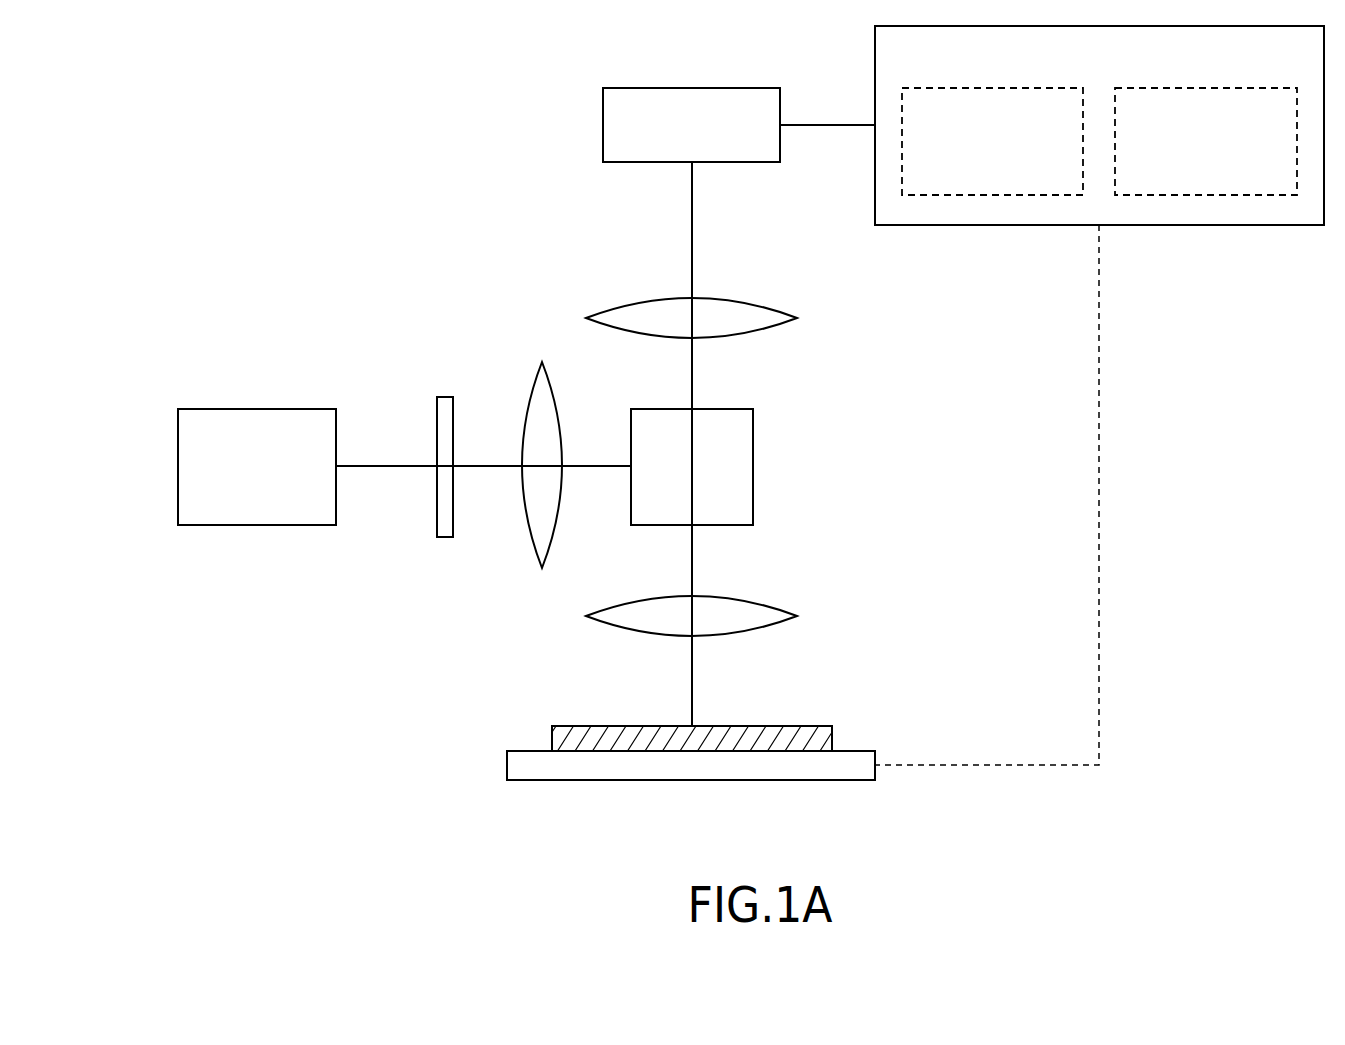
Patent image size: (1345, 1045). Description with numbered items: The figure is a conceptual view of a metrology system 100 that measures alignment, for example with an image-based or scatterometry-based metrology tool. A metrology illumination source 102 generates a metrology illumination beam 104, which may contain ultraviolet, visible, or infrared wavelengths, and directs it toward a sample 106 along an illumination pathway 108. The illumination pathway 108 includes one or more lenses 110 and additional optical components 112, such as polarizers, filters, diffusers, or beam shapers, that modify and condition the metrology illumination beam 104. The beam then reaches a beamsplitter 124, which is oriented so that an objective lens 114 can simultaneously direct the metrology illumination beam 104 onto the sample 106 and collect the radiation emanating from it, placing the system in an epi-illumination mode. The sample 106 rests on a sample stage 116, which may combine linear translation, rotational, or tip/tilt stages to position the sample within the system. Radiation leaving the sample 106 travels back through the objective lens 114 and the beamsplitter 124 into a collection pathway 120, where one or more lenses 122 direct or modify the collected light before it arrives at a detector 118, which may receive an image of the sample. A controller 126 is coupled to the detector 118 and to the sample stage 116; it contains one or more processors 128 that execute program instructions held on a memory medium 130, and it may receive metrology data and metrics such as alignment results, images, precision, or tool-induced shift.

The metrology system 100 is at (232, 57).
The metrology illumination source 102 is at (237, 480).
The metrology illumination beam 104 is at (388, 465).
The sample 106 is at (833, 727).
The illumination pathway 108 is at (518, 348).
The lenses 110 is at (540, 568).
The optical components 112 is at (445, 537).
The objective lens 114 is at (773, 603).
The sample stage 116 is at (876, 753).
The detector 118 is at (672, 137).
The collection pathway 120 is at (783, 396).
The lenses 122 is at (775, 309).
The beamsplitter 124 is at (754, 465).
The controller 126 is at (921, 57).
The processors 128 is at (946, 120).
The memory medium 130 is at (1159, 120).